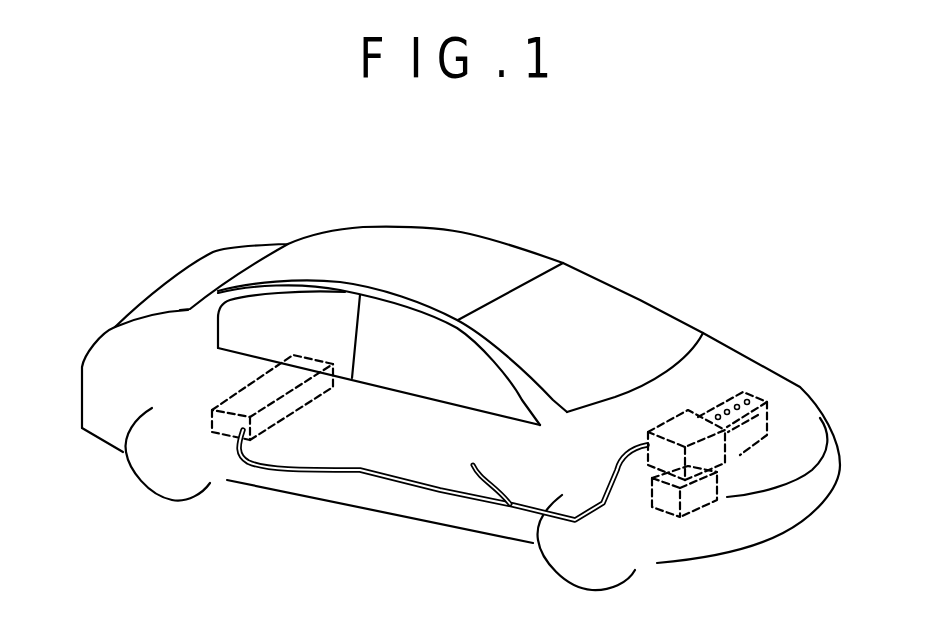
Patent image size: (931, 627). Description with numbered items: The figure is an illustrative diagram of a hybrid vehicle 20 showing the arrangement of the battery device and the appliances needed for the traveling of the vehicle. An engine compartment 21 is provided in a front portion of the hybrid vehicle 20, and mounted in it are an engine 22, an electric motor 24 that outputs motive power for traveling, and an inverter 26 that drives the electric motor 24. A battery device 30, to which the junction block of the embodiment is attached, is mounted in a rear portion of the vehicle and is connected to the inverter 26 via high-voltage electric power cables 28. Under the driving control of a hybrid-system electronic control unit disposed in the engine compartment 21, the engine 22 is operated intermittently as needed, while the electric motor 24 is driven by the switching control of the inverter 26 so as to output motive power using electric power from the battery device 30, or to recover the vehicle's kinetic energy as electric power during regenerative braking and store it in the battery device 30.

The hybrid vehicle 20 is at (444, 209).
The engine compartment 21 is at (743, 371).
The engine 22 is at (767, 422).
The electric motor 24 is at (663, 512).
The inverter 26 is at (645, 450).
The high-voltage electric power cables 28 is at (443, 475).
The battery device 30 is at (240, 391).